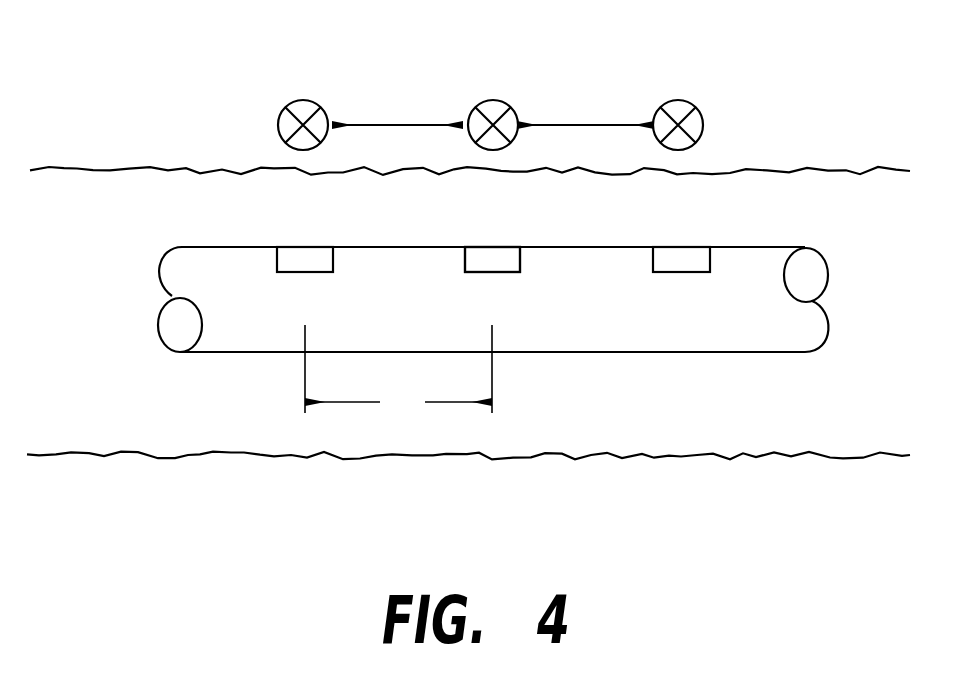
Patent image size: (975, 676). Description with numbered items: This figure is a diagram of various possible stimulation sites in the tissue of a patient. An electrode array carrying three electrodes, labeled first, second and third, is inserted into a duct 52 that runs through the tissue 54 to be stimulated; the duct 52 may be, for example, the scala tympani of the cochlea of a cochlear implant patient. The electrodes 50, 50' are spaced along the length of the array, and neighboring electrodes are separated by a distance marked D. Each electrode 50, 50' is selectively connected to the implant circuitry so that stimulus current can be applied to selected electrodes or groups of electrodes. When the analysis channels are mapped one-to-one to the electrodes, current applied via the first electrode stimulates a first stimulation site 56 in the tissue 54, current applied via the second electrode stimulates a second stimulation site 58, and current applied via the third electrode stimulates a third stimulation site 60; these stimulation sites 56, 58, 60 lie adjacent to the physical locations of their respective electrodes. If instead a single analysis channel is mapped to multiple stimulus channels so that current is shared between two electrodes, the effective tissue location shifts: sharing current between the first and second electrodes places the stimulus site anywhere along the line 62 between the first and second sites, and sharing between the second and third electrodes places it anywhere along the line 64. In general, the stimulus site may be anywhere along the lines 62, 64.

The electrode 50 is at (493, 313).
The electrode 50' is at (485, 227).
The duct 52 is at (88, 448).
The tissue 54 is at (145, 142).
The first stimulation site 56 is at (301, 100).
The second stimulation site 58 is at (492, 100).
The third stimulation site 60 is at (679, 100).
The line 62 is at (387, 124).
The line 64 is at (577, 124).